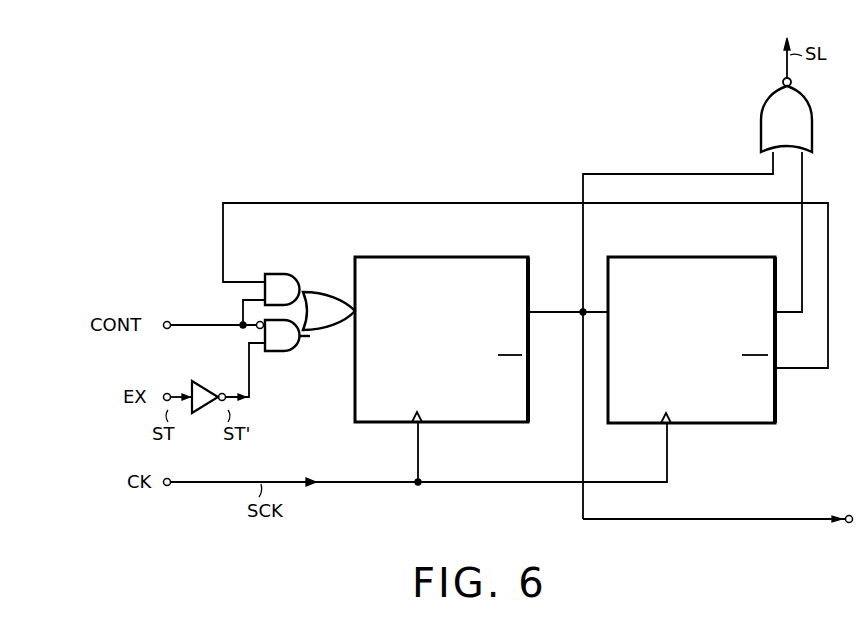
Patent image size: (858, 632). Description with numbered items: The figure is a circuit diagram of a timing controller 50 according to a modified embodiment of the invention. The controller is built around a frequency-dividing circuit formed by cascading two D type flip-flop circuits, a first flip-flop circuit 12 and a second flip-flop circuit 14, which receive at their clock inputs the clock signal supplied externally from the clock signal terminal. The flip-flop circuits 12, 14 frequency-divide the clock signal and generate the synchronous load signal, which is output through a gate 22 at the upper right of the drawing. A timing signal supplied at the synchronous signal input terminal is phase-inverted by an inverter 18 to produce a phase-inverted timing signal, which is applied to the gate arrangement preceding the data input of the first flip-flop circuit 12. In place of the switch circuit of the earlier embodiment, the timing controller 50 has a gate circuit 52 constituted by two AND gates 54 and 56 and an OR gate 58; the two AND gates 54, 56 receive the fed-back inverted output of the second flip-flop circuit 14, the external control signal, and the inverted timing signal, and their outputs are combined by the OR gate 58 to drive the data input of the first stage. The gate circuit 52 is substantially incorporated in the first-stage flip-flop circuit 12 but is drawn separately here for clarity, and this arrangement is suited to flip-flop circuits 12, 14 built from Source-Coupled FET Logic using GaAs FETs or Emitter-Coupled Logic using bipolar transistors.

The first flip-flop circuit 12 is at (443, 256).
The second flip-flop circuit 14 is at (698, 256).
The inverter 18 is at (206, 380).
The NOR gate 22 is at (813, 127).
The timing controller 50 is at (392, 200).
The gate circuit 52 is at (318, 290).
The AND gate 54 is at (273, 273).
The AND gate 56 is at (280, 353).
The OR gate 58 is at (316, 334).